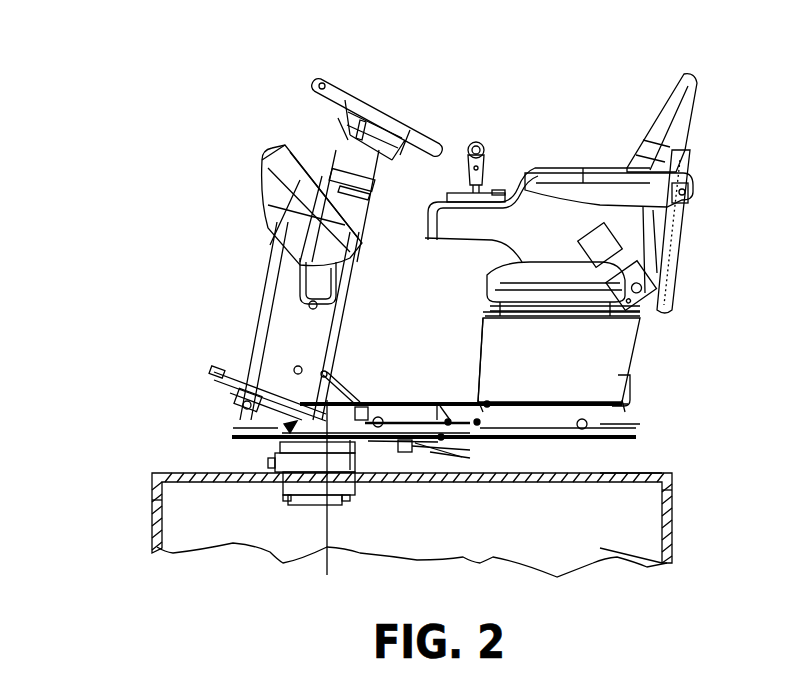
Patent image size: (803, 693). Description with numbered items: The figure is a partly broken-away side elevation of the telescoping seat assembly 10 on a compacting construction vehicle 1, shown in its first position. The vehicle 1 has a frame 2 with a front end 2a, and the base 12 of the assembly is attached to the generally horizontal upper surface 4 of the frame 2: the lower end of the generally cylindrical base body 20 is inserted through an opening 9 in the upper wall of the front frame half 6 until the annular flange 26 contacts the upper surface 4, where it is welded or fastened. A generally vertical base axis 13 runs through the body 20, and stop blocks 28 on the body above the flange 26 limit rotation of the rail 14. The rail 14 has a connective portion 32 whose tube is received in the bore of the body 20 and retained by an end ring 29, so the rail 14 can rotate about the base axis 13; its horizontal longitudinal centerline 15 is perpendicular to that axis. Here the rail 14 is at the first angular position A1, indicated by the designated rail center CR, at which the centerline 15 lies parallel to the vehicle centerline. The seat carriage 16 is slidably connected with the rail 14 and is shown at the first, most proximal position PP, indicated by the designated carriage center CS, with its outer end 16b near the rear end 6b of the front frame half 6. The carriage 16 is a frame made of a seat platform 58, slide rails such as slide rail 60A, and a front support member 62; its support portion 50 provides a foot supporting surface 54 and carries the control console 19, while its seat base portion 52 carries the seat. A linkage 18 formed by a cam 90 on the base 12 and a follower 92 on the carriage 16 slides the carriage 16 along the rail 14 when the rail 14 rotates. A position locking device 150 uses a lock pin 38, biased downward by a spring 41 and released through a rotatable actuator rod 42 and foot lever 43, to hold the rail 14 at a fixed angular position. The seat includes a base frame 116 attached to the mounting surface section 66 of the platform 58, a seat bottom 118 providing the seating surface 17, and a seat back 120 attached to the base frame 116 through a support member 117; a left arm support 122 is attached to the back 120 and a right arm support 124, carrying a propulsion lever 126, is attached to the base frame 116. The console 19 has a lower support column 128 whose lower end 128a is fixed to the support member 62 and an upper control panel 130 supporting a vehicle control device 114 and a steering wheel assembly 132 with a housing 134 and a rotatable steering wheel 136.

The construction vehicle 1 is at (97, 446).
The frame 2 is at (135, 508).
The front end 2a is at (153, 523).
The upper surface 4 is at (640, 473).
The front frame half 6 is at (646, 565).
The rear end of front frame half 6b is at (675, 500).
The opening 9 is at (283, 485).
The telescoping seat assembly 10 is at (166, 250).
The base 12 is at (246, 535).
The base axis 13 is at (327, 570).
The rail 14 is at (272, 428).
The rail centerline 15 is at (620, 433).
The seat carriage 16 is at (644, 382).
The outer end of seat carriage 16b is at (633, 400).
The seating surface 17 is at (540, 237).
The linkage 18 is at (450, 405).
The vehicle control console 19 is at (238, 157).
The cylindrical body 20 is at (348, 482).
The annular flange 26 is at (270, 470).
The stop blocks 28 is at (275, 448).
The end ring 29 is at (290, 502).
The connective portion 32 is at (340, 502).
The lock pin 38 is at (408, 414).
The spring 41 is at (420, 469).
The actuator rod 42 is at (383, 407).
The foot lever 43 is at (355, 378).
The support portion 50 is at (213, 389).
The seat base portion 52 is at (599, 418).
The foot supporting surface 54 is at (285, 396).
The seat platform 58 is at (436, 420).
The slide rail 60A is at (538, 425).
The front support member 62 is at (218, 370).
The seat mounting surface section 66 is at (540, 405).
The cam 90 is at (447, 455).
The follower 92 is at (435, 450).
The vehicle control device 114 is at (405, 75).
The base frame 116 is at (615, 352).
The support member 117 is at (672, 246).
The seat bottom 118 is at (515, 265).
The seat back 120 is at (680, 138).
The left arm support 122 is at (672, 207).
The right arm support 124 is at (583, 167).
The propulsion lever 126 is at (476, 142).
The lower support column 128 is at (264, 300).
The lower end of support column 128a is at (270, 373).
The upper control panel 130 is at (254, 205).
The steering wheel assembly 132 is at (411, 122).
The housing 134 is at (372, 184).
The steering wheel 136 is at (327, 88).
The position locking device 150 is at (361, 457).
The first angular position A1 is at (441, 436).
The rail center CR is at (448, 420).
The carriage center CS is at (478, 420).
The most proximal position PP is at (477, 422).